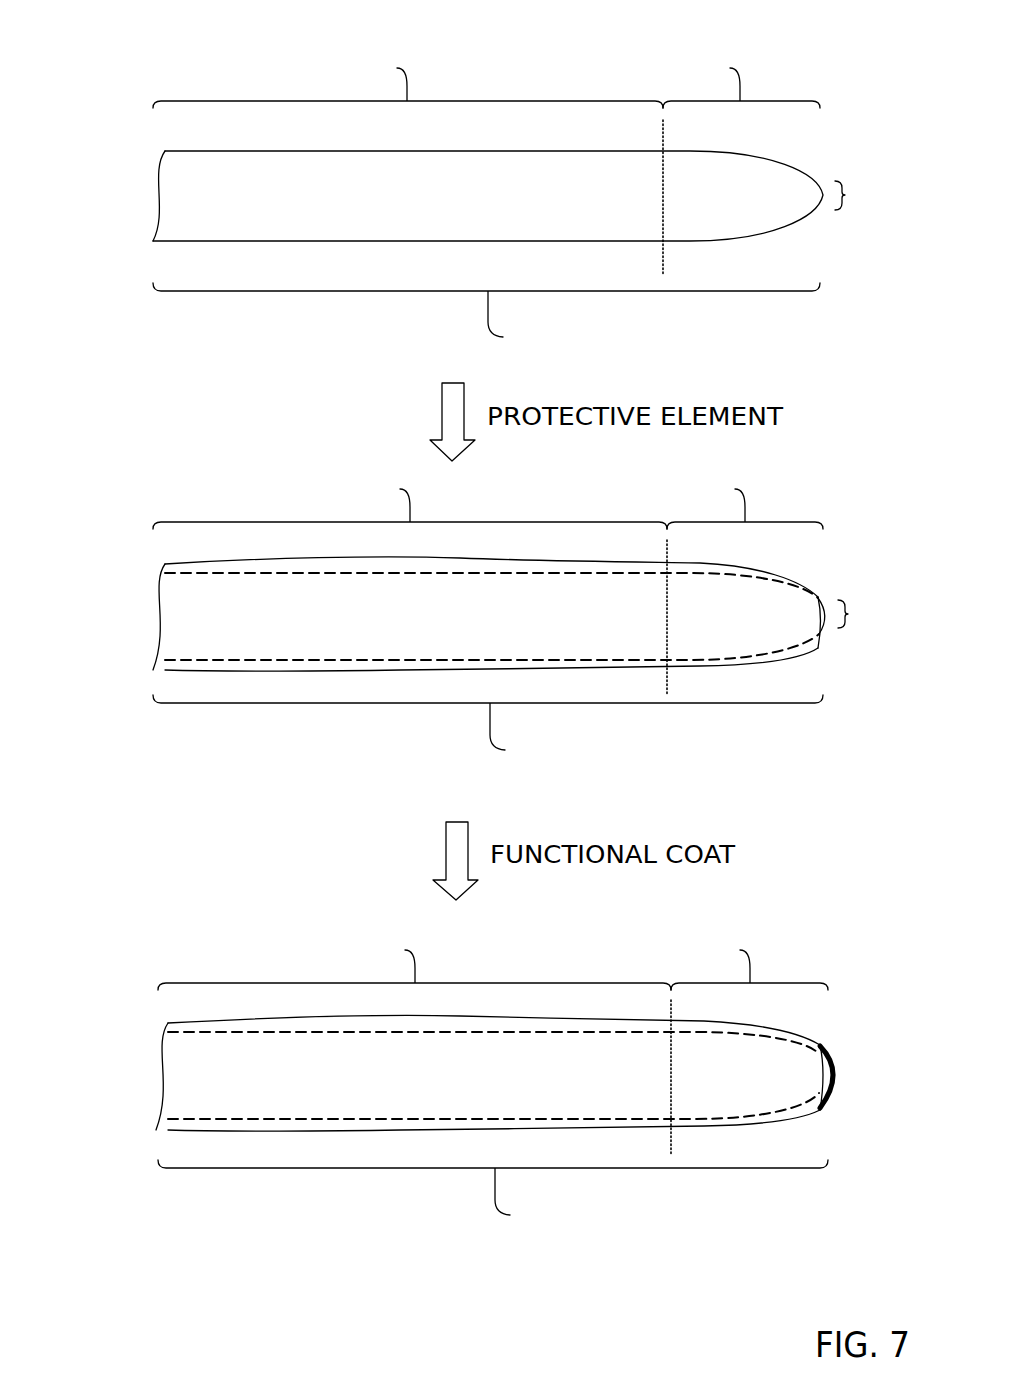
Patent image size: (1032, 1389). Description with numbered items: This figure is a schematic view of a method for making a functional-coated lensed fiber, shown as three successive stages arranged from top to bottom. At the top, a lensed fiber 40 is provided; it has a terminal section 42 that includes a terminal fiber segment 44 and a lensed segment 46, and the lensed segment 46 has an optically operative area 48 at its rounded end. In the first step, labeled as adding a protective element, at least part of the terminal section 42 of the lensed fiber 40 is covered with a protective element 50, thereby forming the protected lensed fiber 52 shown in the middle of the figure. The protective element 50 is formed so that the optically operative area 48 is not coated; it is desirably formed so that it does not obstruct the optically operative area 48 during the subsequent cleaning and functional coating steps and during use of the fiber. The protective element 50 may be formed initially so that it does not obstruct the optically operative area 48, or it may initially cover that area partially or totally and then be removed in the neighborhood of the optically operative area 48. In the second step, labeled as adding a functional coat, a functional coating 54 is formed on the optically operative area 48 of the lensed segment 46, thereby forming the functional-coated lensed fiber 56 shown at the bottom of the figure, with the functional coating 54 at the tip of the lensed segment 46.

The lensed fiber 40 is at (99, 124).
The terminal section 42 is at (490, 762).
The terminal fiber segment 44 is at (412, 520).
The lensed segment 46 is at (745, 520).
The optically operative area 48 is at (845, 195).
The protective element 50 is at (787, 580).
The protected lensed fiber 52 is at (99, 546).
The functional coating 54 is at (838, 1082).
The functional-coated lensed fiber 56 is at (102, 1003).